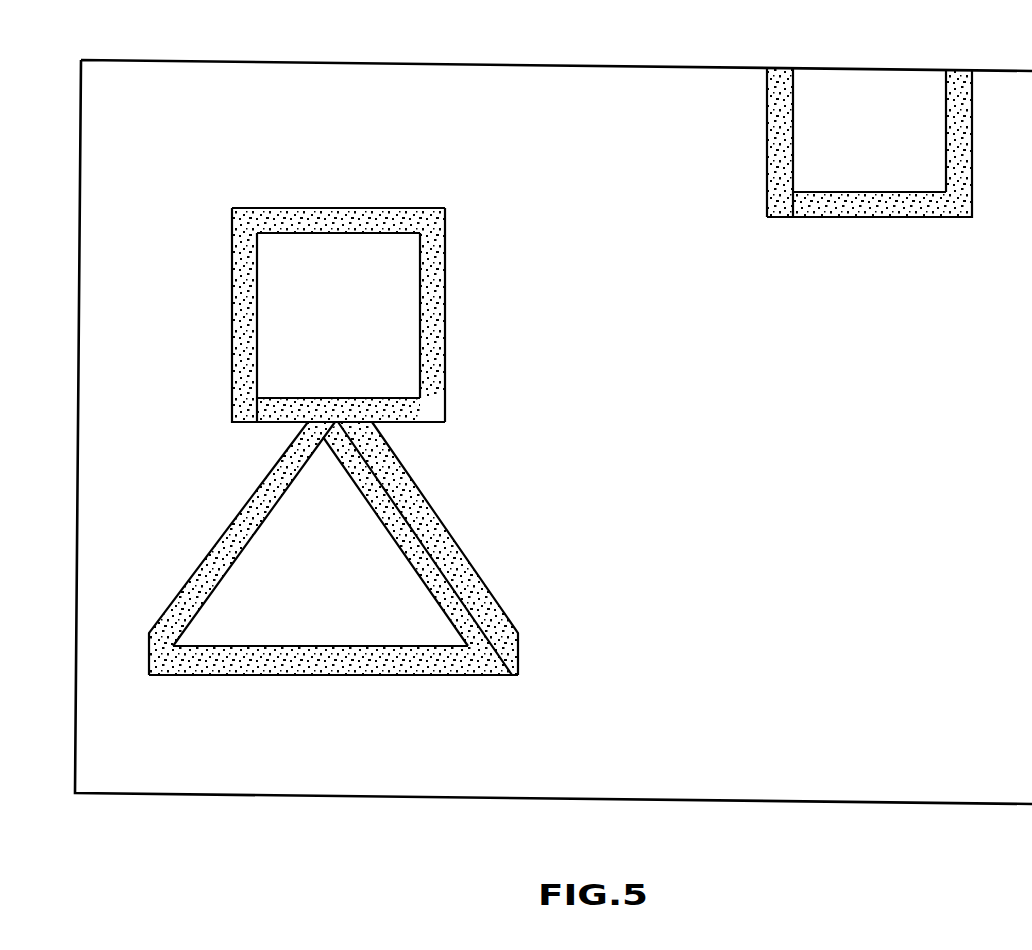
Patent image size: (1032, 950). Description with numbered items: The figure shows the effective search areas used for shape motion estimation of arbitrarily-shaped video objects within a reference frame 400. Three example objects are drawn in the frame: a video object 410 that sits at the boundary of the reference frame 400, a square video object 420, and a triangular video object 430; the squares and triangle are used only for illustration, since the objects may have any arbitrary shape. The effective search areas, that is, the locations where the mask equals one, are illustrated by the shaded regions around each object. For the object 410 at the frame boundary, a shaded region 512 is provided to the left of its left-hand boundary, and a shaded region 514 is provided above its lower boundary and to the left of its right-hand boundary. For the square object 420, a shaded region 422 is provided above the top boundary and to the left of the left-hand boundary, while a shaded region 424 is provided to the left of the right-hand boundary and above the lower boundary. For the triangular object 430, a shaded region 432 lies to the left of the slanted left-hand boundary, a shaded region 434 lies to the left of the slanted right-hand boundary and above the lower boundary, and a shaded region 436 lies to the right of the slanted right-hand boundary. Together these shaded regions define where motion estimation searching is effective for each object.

The reference frame 400 is at (513, 64).
The video object 410 is at (846, 170).
The video object 420 is at (386, 289).
The shaded region 422 is at (292, 222).
The shaded region 424 is at (430, 283).
The video object 430 is at (337, 548).
The shaded region 432 is at (218, 557).
The shaded region 434 is at (442, 582).
The shaded region 436 is at (457, 570).
The shaded region 512 is at (780, 145).
The shaded region 514 is at (920, 205).